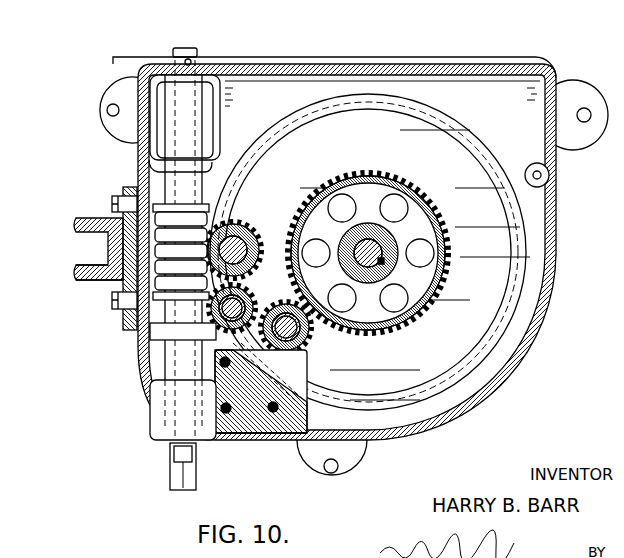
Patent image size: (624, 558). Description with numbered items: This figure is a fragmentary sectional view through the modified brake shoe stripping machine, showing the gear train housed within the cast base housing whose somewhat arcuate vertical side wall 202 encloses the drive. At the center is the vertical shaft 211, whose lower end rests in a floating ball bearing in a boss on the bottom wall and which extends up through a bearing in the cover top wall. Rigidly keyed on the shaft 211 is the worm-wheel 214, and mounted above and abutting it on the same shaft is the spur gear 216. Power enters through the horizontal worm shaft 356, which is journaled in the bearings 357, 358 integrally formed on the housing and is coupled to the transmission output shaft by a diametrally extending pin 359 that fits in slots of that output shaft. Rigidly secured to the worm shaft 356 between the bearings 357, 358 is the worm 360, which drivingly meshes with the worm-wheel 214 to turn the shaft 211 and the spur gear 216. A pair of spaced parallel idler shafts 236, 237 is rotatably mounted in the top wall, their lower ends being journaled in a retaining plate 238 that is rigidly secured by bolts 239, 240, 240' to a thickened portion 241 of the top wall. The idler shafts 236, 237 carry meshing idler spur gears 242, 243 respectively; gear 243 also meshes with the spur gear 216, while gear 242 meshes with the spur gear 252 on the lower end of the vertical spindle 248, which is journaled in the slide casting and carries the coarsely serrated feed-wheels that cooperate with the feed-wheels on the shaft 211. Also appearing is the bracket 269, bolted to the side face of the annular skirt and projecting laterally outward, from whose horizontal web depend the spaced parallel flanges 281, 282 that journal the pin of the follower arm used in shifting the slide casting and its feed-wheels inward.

The side wall 202 is at (535, 340).
The vertical shaft 211 is at (388, 268).
The worm-wheel 214 is at (466, 140).
The spur gear 216 is at (440, 224).
The idler shaft 236 is at (242, 296).
The idler shaft 237 is at (307, 340).
The retaining plate 238 is at (308, 372).
The bolt 239 is at (220, 362).
The bolt 240 is at (203, 401).
The bolt 240' is at (304, 415).
The thickened portion 241 is at (235, 430).
The idler spur gear 242 is at (205, 320).
The idler spur gear 243 is at (300, 345).
The vertical spindle 248 is at (238, 233).
The spur gear 252 is at (243, 220).
The bracket 269 is at (108, 287).
The flange 281 is at (86, 218).
The flange 282 is at (86, 266).
The worm shaft 356 is at (178, 48).
The bearing 357 is at (163, 143).
The bearing 358 is at (160, 428).
The pin 359 is at (196, 63).
The worm 360 is at (150, 190).